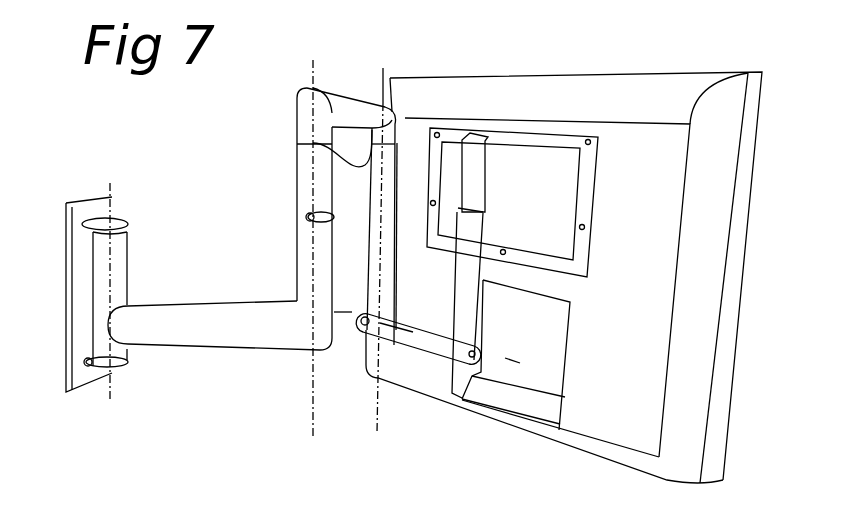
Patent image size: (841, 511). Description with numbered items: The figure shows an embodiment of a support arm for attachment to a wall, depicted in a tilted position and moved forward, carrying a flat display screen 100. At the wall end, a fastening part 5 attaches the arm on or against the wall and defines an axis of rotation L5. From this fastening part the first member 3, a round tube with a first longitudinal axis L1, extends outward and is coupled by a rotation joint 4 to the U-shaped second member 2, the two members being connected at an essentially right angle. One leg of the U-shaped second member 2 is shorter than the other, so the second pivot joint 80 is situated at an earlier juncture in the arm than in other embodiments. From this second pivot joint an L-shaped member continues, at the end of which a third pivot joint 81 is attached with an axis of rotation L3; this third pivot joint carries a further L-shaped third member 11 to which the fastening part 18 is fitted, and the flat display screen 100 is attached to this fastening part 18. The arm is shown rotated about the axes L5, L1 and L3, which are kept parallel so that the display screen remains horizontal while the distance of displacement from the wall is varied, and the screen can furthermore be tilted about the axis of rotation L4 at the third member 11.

The display device (television) 100 is at (703, 90).
The fastening part 18 is at (517, 135).
The third pivot joint 81 is at (432, 330).
The third member 11 is at (393, 316).
The second member 2 is at (362, 102).
The second pivot joint 80 is at (297, 145).
The rotation joint 4 is at (292, 303).
The first member 3 is at (192, 330).
The fastening part 5 is at (80, 272).
The first longitudinal axis L1 is at (311, 57).
The axis of rotation L3 is at (377, 410).
The axis of rotation L4 is at (352, 312).
The axis of rotation L5 is at (110, 400).